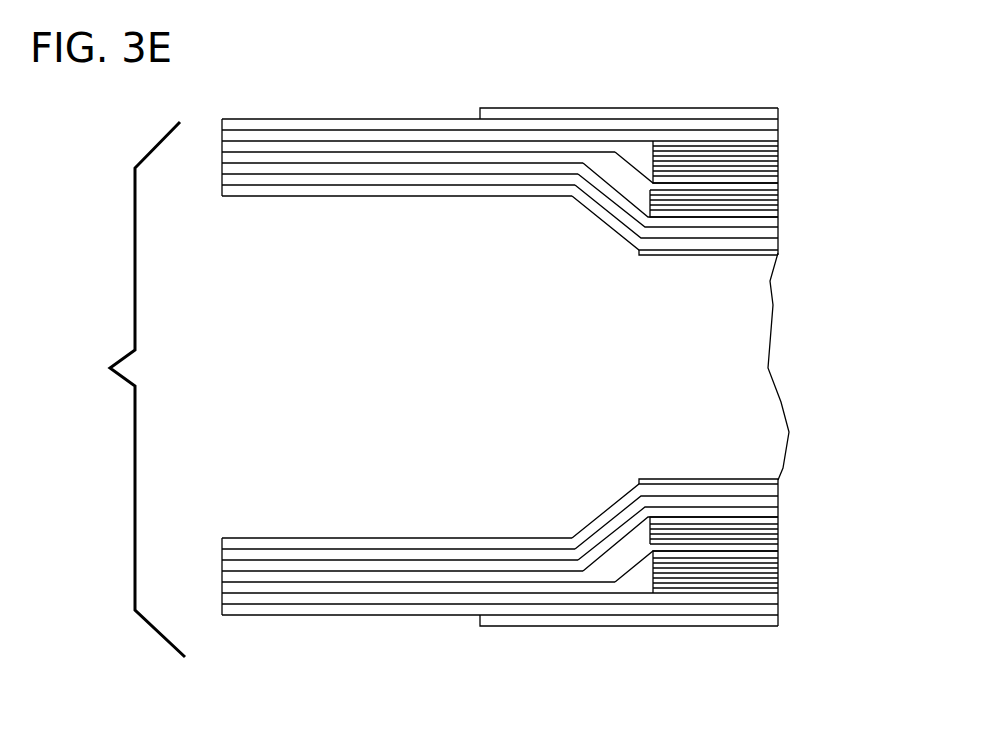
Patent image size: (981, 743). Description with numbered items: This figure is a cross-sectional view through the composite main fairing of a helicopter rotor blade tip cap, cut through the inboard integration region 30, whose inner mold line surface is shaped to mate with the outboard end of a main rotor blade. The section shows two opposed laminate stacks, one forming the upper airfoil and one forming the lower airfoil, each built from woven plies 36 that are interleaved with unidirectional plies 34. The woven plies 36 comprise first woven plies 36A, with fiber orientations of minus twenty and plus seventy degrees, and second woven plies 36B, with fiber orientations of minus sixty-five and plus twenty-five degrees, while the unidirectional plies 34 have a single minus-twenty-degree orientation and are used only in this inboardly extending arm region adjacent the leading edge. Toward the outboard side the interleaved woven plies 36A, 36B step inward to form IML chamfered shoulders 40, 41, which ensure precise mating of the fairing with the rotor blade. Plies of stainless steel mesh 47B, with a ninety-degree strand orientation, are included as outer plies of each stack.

The inboard integration region 30 is at (126, 389).
The unidirectional plies 34 is at (745, 135).
The woven plies 36 is at (336, 108).
The first woven plies 36A is at (707, 165).
The second woven plies 36B is at (667, 152).
The IML chamfered shoulder 40 is at (598, 223).
The IML chamfered shoulder 41 is at (599, 512).
The stainless steel mesh plies 47B is at (540, 115).